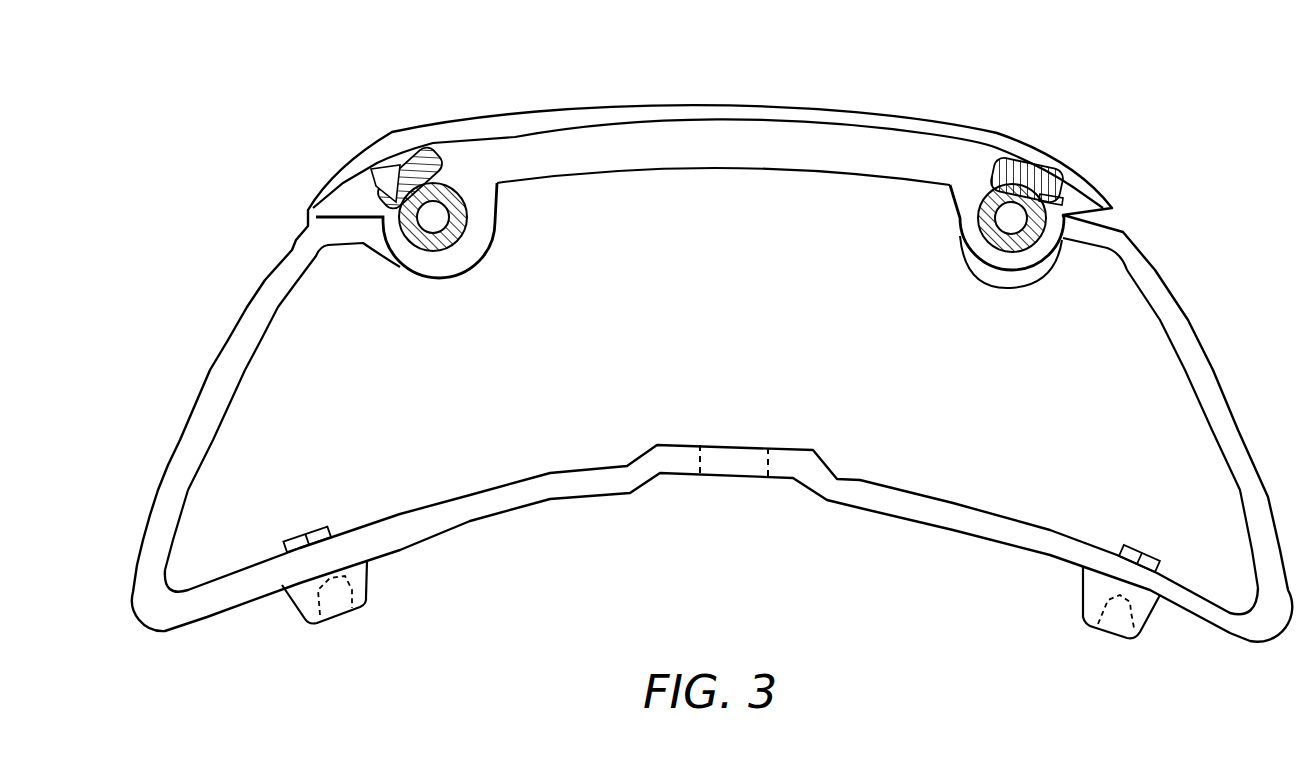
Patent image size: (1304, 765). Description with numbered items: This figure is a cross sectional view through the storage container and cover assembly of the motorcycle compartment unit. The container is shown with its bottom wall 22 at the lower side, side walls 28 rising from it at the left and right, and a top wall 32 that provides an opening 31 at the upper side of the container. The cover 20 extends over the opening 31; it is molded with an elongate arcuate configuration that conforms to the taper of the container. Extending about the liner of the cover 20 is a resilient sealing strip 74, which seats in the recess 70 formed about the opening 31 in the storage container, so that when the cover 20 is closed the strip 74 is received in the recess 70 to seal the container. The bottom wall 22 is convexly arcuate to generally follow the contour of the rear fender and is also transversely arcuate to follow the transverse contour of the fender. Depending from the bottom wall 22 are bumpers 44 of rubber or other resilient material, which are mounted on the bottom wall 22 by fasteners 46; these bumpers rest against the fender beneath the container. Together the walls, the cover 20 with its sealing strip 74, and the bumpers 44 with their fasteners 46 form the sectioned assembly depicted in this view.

The cover 20 is at (838, 104).
The bottom wall 22 is at (967, 533).
The side walls 28 is at (1215, 378).
The opening 31 is at (602, 177).
The top wall 32 is at (785, 175).
The bumpers 44 is at (1150, 627).
The fasteners 46 is at (325, 528).
The recess 70 is at (1022, 290).
The resilient sealing strip 74 is at (1056, 203).